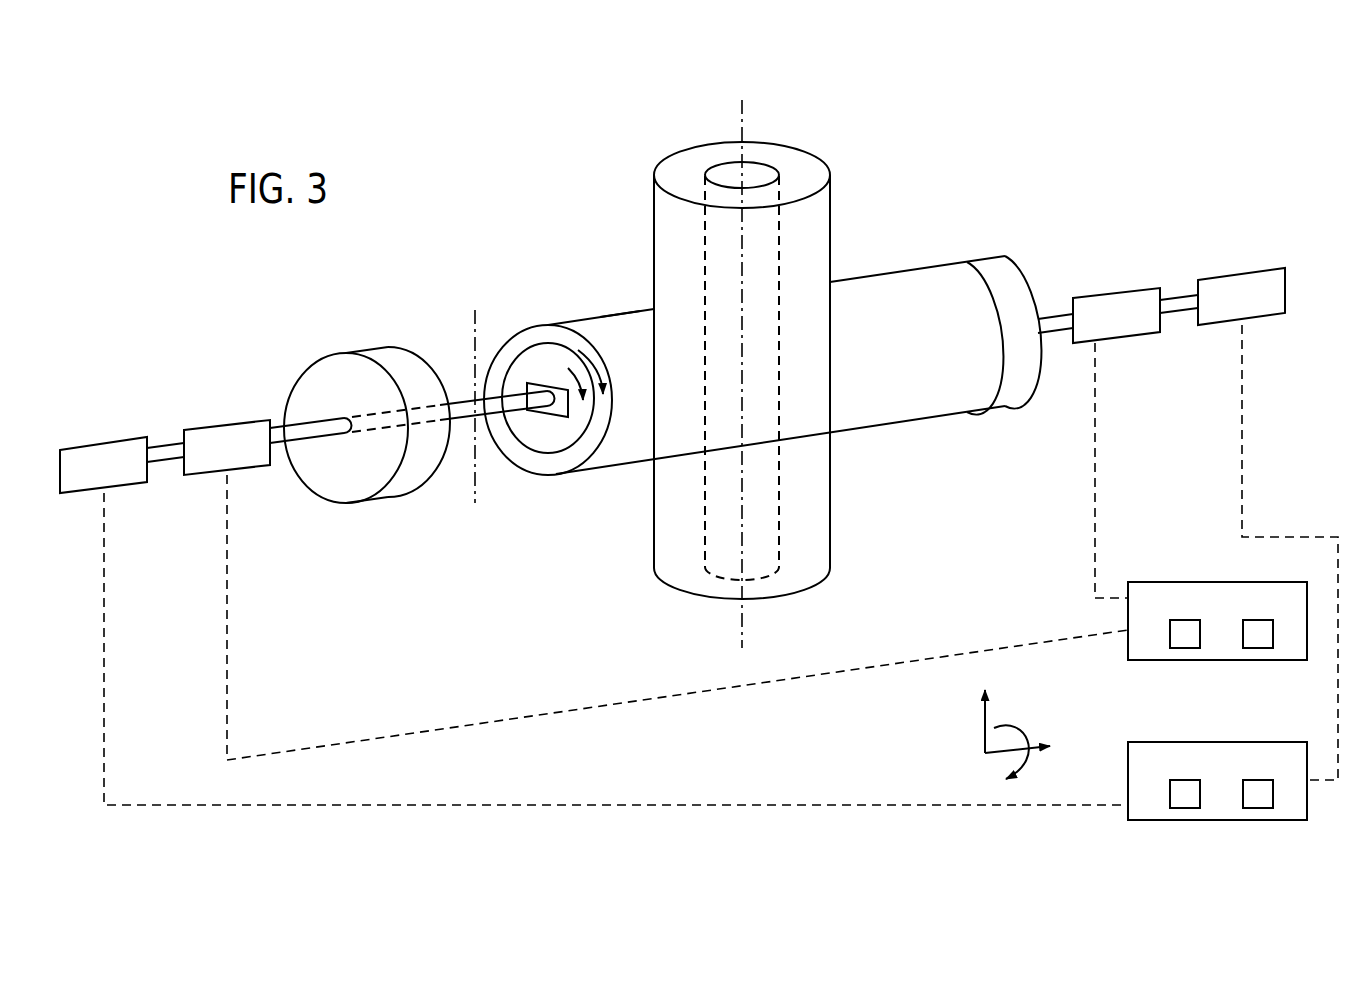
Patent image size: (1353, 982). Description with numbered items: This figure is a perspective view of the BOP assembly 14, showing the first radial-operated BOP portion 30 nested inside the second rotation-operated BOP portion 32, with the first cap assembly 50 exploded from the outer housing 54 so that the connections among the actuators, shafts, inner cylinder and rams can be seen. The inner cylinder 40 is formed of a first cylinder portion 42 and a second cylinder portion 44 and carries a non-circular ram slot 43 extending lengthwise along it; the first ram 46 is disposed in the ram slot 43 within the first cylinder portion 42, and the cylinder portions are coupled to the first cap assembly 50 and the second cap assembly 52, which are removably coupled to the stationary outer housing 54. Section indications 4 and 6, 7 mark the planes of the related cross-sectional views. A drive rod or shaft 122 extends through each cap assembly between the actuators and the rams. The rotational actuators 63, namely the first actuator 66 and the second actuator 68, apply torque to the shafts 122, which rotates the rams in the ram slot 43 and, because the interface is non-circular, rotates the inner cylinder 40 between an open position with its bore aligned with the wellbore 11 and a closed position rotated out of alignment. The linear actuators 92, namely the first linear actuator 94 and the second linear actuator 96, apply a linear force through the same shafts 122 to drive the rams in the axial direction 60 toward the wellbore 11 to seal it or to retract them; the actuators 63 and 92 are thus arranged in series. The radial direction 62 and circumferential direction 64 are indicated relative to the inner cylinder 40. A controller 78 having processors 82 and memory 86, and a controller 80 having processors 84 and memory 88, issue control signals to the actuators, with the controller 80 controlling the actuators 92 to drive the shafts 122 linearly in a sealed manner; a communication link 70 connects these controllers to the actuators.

The section line 4- 4 is at (742, 102).
The section line 6- 6 is at (500, 407).
The section line 7- 7 is at (475, 308).
The wellbore 11 is at (718, 163).
The BOP assembly 14 is at (783, 363).
The first radial-operated BOP portion 30 is at (545, 422).
The second rotation-operated BOP portion 32 is at (540, 374).
The inner cylinder 40 is at (544, 343).
The first cylinder portion 42 is at (595, 322).
The ram slot 43 is at (557, 418).
The second cylinder portion 44 is at (796, 337).
The first ram 46 is at (551, 390).
The first cap assembly 50 is at (356, 353).
The second cap assembly 52 is at (1015, 282).
The outer housing 54 is at (628, 311).
The axial direction 60 is at (985, 754).
The radial direction 62 is at (983, 742).
The actuators 63 is at (662, 340).
The circumferential direction 64 is at (1020, 727).
The first actuator 66 is at (229, 430).
The second actuator 68 is at (1118, 296).
The communication link 70 is at (684, 720).
The controller 78 is at (1218, 620).
The controller 80 is at (1218, 780).
The processors 82 is at (1185, 648).
The processors 84 is at (1185, 808).
The memory 86 is at (1258, 648).
The memory 88 is at (1258, 808).
The actuators 92 is at (92, 440).
The first linear actuator 94 is at (128, 486).
The second linear actuator 96 is at (1243, 278).
The drive rod or shaft 122 is at (672, 428).